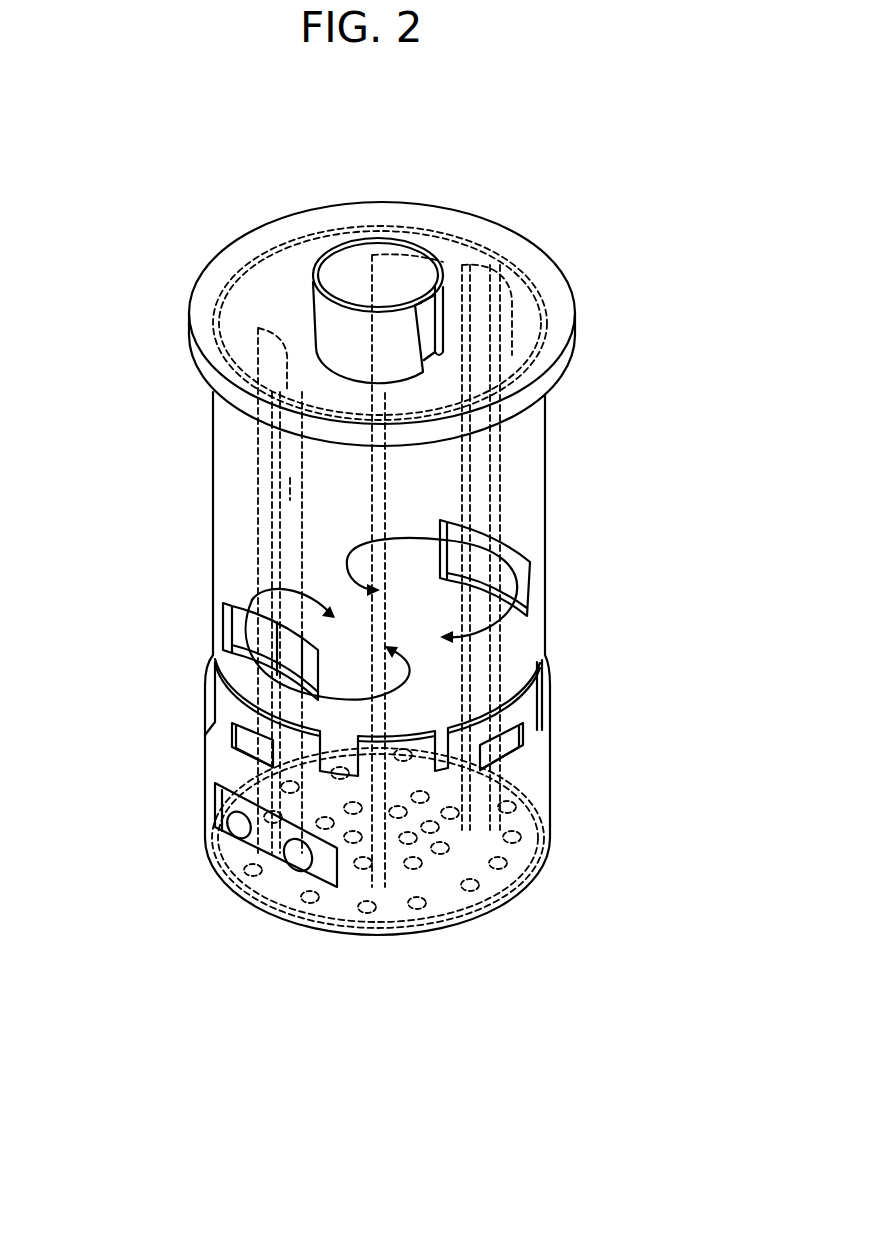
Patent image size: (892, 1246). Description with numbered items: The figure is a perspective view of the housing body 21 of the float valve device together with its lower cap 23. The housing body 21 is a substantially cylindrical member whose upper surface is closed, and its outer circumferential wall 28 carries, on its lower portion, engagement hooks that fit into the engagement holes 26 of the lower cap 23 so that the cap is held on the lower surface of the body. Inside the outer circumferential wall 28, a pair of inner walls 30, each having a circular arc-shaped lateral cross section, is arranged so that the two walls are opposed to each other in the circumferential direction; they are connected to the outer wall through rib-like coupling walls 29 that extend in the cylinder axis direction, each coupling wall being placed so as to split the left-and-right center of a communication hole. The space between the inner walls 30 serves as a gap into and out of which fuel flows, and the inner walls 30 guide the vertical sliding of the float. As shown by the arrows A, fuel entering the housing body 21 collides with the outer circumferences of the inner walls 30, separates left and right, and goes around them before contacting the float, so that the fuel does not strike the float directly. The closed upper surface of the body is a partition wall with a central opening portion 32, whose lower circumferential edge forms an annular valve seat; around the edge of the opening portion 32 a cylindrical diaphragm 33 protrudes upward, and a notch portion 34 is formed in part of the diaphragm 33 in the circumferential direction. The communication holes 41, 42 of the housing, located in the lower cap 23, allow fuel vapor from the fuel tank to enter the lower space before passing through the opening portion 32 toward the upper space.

The housing body 21 is at (190, 537).
The lower cap 23 is at (267, 918).
The engagement holes 26 is at (238, 747).
The outer circumferential wall 28 is at (210, 433).
The coupling walls 29 is at (290, 478).
The inner walls 30 is at (287, 327).
The opening portion 32 is at (427, 330).
The diaphragm 33 is at (317, 278).
The notch portion 34 is at (427, 300).
The communication hole 41 is at (363, 917).
The communication holes 42 is at (467, 872).
The arrows A is at (497, 543).